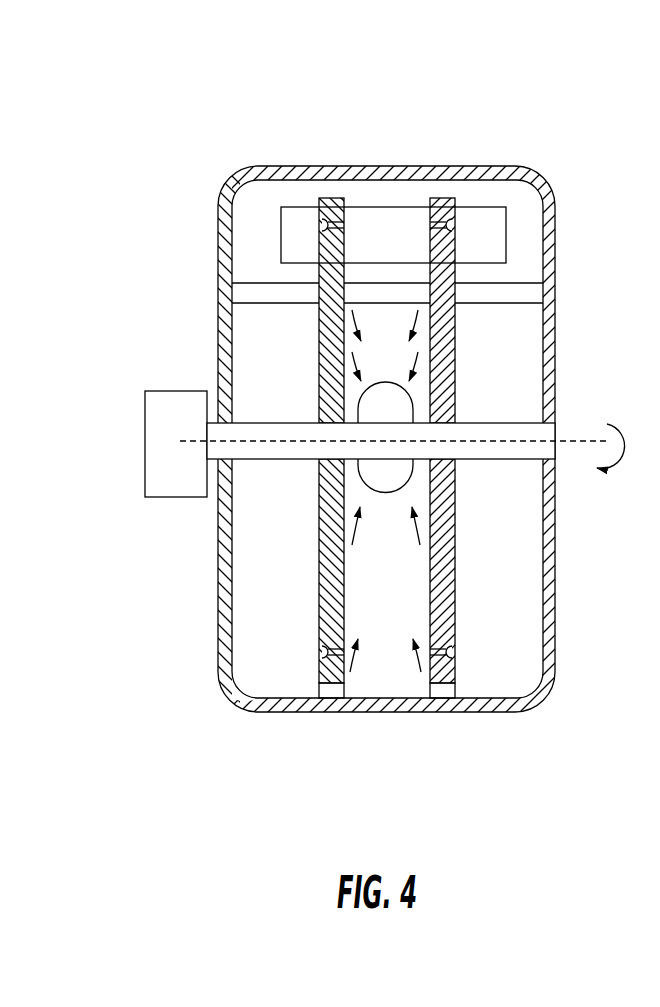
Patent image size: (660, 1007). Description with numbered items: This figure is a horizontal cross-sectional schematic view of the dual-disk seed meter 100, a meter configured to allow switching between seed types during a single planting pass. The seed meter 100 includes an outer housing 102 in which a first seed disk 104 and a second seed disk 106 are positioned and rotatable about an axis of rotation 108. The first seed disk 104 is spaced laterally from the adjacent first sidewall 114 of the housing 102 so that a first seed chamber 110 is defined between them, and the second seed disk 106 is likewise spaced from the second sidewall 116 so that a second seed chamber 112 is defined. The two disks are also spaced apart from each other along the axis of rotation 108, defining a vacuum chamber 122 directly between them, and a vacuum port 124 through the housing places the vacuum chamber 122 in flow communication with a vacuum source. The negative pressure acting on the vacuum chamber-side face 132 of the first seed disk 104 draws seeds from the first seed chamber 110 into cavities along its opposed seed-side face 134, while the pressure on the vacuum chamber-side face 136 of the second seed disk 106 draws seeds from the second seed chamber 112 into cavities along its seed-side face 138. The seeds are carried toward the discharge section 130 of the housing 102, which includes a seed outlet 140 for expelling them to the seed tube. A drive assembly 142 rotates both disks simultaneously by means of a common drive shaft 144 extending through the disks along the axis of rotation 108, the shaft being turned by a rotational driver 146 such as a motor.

The dual-disk seed meter 100 is at (493, 143).
The outer housing 102 is at (270, 163).
The first seed disk 104 is at (316, 330).
The second seed disk 106 is at (459, 325).
The axis of rotation 108 is at (584, 438).
The first seed chamber 110 is at (286, 510).
The second seed chamber 112 is at (516, 498).
The first sidewall 114 is at (218, 523).
The second sidewall 116 is at (554, 507).
The vacuum chamber 122 is at (406, 598).
The vacuum port 124 is at (360, 483).
The discharge section 130 is at (517, 209).
The vacuum chamber-side face 132 is at (350, 623).
The seed-side face 134 is at (318, 372).
The vacuum chamber-side face 136 is at (420, 576).
The seed-side face 138 is at (456, 540).
The seed outlet 140 is at (394, 206).
The drive assembly 142 is at (125, 387).
The drive shaft 144 is at (514, 423).
The rotational driver 146 is at (156, 450).